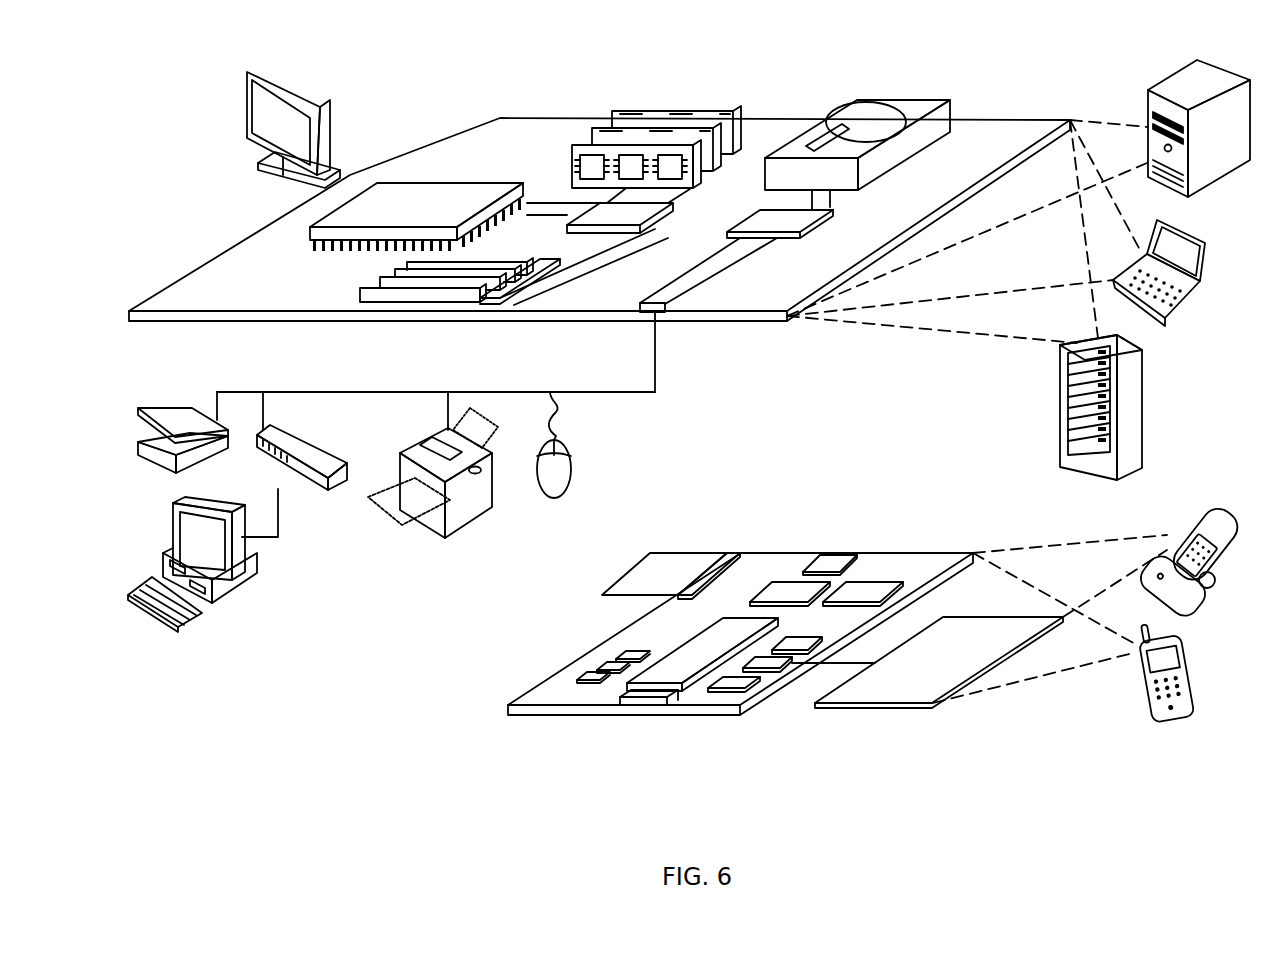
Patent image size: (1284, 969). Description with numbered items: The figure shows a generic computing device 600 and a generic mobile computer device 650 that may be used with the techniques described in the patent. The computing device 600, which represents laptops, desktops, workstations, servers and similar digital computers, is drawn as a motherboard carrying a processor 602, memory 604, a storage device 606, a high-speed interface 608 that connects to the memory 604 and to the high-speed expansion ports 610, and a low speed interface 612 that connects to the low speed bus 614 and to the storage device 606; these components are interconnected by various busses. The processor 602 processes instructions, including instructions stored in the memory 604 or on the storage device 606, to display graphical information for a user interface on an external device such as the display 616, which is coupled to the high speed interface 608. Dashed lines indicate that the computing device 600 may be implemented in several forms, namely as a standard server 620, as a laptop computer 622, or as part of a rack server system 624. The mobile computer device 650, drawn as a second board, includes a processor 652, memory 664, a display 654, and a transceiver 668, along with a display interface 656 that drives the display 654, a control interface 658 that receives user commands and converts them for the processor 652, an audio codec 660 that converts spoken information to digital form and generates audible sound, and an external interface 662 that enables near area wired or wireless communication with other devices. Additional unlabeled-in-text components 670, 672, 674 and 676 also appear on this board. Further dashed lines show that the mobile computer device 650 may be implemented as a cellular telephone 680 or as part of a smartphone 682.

The computing device 600 is at (430, 96).
The processor 602 is at (312, 232).
The memory 604 is at (630, 118).
The storage device 606 is at (857, 106).
The high-speed interface 608 is at (590, 216).
The high-speed expansion ports 610 is at (387, 287).
The low speed interface 612 is at (768, 212).
The low speed bus 614 is at (667, 313).
The display 616 is at (250, 73).
The standard server 620 is at (1150, 110).
The laptop computer 622 is at (1210, 256).
The rack server system 624 is at (1061, 432).
The mobile computer device 650 is at (486, 714).
The processor 652 is at (676, 676).
The display 654 is at (920, 700).
The display interface 656 is at (740, 683).
The control interface 658 is at (773, 663).
The audio codec 660 is at (797, 641).
The external interface 662 is at (643, 700).
The memory 664 is at (598, 670).
The transceiver 668 is at (862, 590).
The component 670 is at (838, 558).
The connector strip 672 is at (721, 564).
The connector pad 674 is at (656, 566).
The memory 676 is at (790, 588).
The cellular telephone 680 is at (1195, 520).
The smartphone 682 is at (1135, 684).